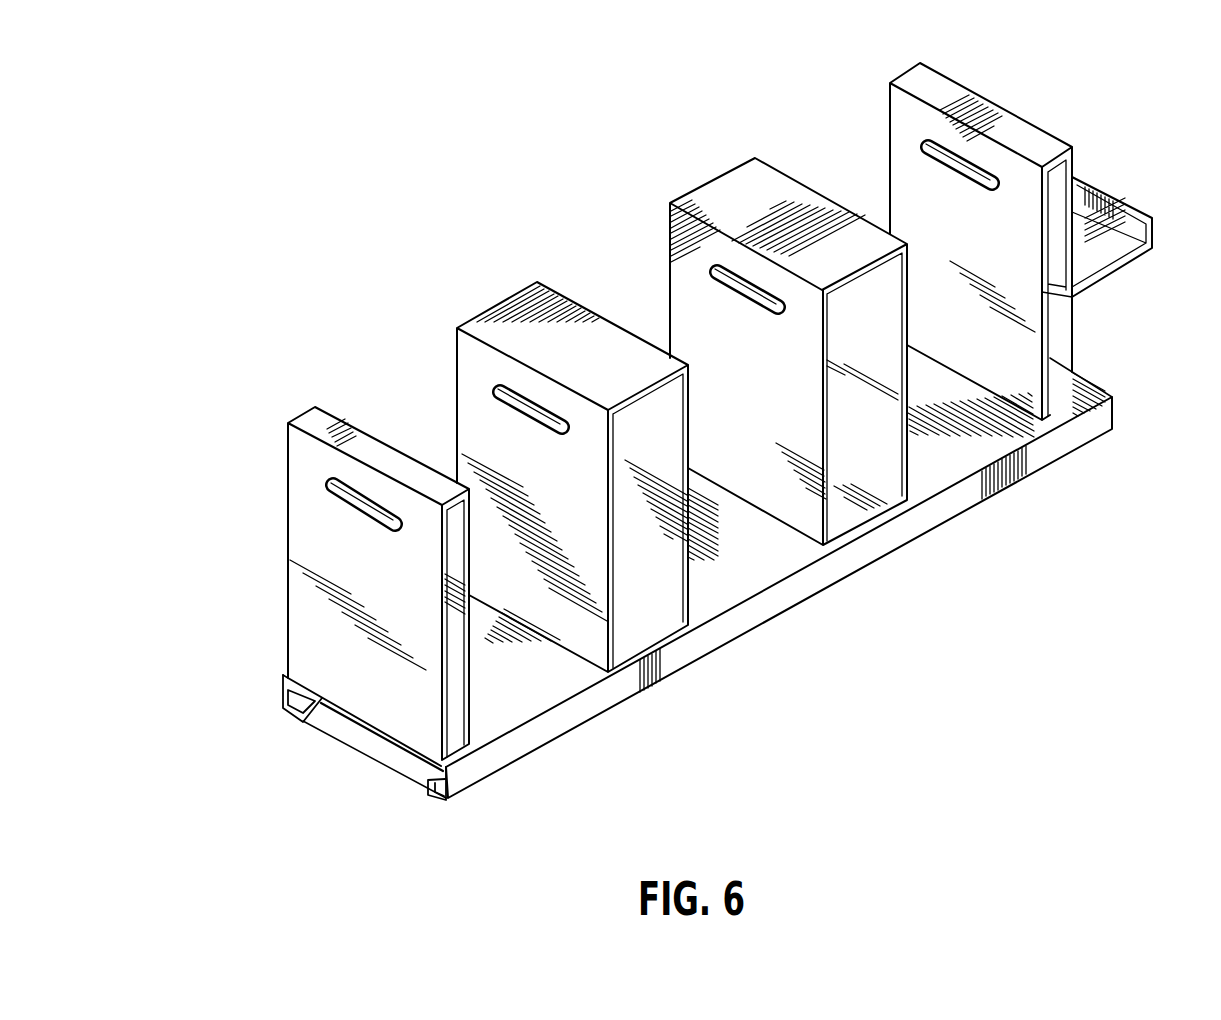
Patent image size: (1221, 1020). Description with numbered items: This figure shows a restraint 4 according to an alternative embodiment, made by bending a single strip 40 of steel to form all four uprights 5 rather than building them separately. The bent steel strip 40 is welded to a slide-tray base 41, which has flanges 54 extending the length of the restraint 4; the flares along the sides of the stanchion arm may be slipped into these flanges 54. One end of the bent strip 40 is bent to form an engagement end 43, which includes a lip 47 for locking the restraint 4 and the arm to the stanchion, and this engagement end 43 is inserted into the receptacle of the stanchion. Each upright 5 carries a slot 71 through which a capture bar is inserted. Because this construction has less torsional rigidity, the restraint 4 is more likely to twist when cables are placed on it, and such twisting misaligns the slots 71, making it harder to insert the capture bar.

The restraint 4 is at (232, 571).
The divider 5 is at (903, 68).
The strip 40 is at (455, 364).
The slide-tray base 41 is at (652, 640).
The engagement end 43 is at (1131, 274).
The lip 47 is at (1138, 204).
The flanges 54 is at (290, 722).
The slots 71 is at (377, 523).